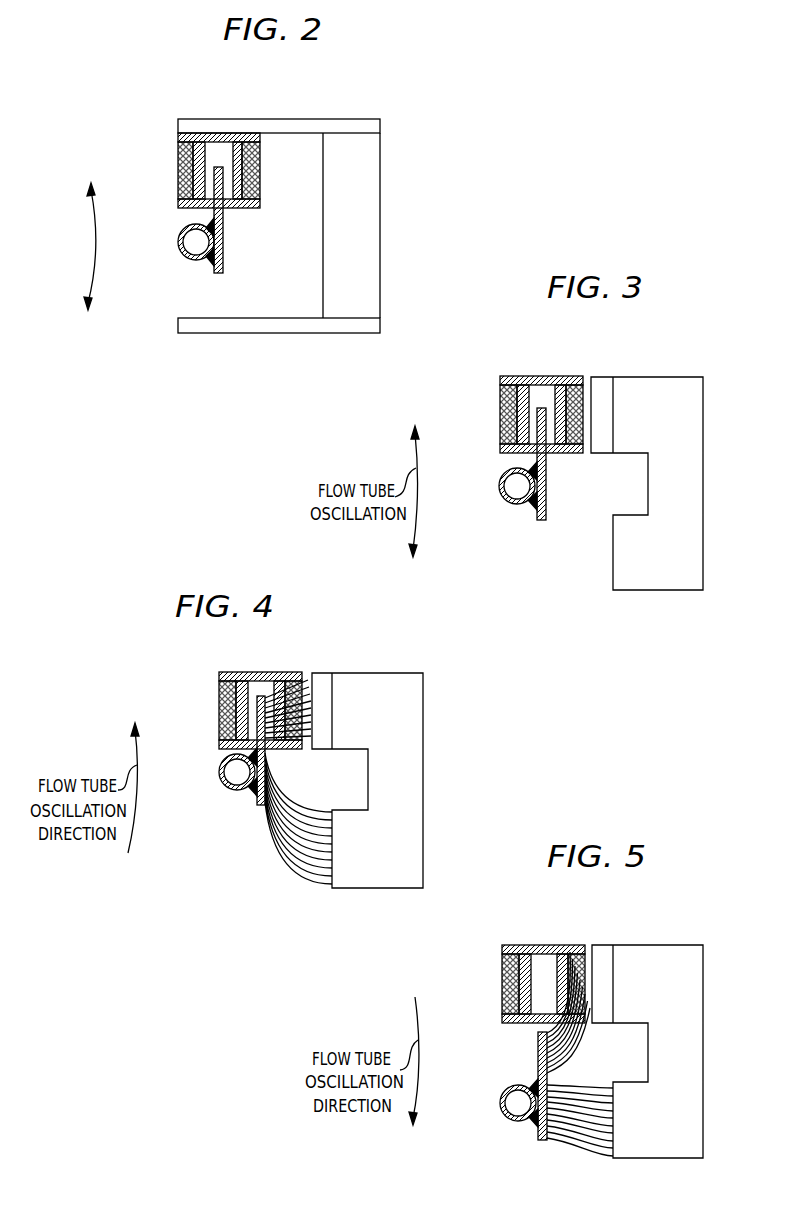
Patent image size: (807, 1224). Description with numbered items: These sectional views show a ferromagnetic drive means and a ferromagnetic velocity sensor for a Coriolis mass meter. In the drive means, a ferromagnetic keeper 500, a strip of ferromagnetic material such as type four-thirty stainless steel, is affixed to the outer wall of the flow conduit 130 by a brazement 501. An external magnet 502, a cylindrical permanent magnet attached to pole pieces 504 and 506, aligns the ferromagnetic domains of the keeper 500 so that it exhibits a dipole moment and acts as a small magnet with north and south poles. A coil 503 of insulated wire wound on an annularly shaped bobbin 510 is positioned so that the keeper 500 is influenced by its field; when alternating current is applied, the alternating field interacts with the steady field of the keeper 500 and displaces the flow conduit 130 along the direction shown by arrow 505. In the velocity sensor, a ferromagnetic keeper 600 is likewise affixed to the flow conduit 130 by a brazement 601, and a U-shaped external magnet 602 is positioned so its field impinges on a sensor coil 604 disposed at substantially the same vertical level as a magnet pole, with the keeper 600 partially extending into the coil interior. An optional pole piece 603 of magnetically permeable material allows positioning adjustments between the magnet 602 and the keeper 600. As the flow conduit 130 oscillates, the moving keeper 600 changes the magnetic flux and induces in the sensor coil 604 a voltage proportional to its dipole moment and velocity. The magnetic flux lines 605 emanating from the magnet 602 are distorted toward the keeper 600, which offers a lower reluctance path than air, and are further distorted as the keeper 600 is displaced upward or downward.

In FIG. 2, the flow conduit 130 is at (179, 244).
In FIG. 3, the flow conduit 130 is at (502, 485).
In FIG. 4, the flow conduit 130 is at (222, 768).
In FIG. 5, the flow conduit 130 is at (500, 1105).
In FIG. 2, the ferromagnetic keeper 500 is at (224, 236).
In FIG. 2, the brazement 501 is at (207, 265).
In FIG. 2, the external magnet 502 is at (380, 197).
In FIG. 2, the coil 503 is at (180, 155).
In FIG. 2, the pole piece 504 is at (278, 119).
In FIG. 2, the arrow 505 is at (93, 225).
In FIG. 2, the pole piece 506 is at (313, 333).
In FIG. 2, the bobbin 510 is at (260, 205).
In FIG. 3, the ferromagnetic keeper 600 is at (546, 477).
In FIG. 4, the ferromagnetic keeper 600 is at (257, 810).
In FIG. 5, the ferromagnetic keeper 600 is at (542, 1140).
In FIG. 3, the brazement 601 is at (535, 507).
In FIG. 4, the brazement 601 is at (253, 795).
In FIG. 5, the brazement 601 is at (533, 1130).
In FIG. 3, the external magnet 602 is at (703, 455).
In FIG. 4, the external magnet 602 is at (423, 750).
In FIG. 5, the external magnet 602 is at (703, 1025).
In FIG. 3, the pole piece 603 is at (598, 376).
In FIG. 3, the sensor coil 604 is at (500, 397).
In FIG. 4, the sensor coil 604 is at (220, 692).
In FIG. 5, the sensor coil 604 is at (502, 967).
In FIG. 4, the magnetic flux lines 605 is at (297, 682).
In FIG. 5, the magnetic flux lines 605 is at (585, 962).